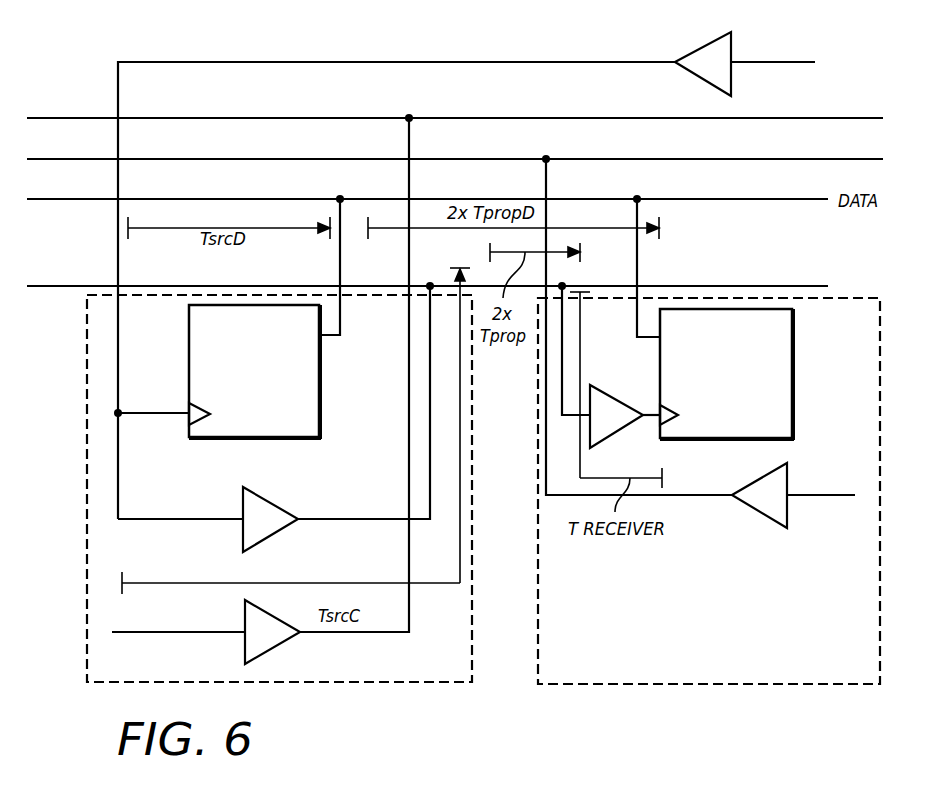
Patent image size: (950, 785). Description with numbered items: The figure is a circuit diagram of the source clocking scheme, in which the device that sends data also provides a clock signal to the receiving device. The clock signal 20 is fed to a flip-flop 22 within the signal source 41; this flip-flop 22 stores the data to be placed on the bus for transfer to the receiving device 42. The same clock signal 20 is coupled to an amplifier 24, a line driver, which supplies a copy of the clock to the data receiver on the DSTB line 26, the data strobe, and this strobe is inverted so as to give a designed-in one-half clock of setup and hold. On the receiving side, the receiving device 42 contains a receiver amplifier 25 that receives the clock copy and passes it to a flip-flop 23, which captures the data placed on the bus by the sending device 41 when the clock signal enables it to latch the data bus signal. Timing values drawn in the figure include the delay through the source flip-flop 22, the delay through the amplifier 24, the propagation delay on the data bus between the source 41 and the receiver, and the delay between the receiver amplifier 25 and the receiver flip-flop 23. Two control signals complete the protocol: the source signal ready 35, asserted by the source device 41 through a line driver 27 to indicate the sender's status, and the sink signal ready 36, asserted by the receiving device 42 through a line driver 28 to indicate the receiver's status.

The clock signal 20 is at (656, 62).
The flip-flop 22 is at (319, 380).
The flip-flop 23 is at (792, 383).
The amplifier 24 is at (272, 533).
The receiver amplifier 25 is at (600, 443).
The DSTB line 26 is at (726, 286).
The line driver 27 is at (273, 645).
The line driver 28 is at (754, 510).
The source signal ready 35 is at (638, 118).
The sink signal ready 36 is at (688, 159).
The signal source 41 is at (437, 683).
The receiving device 42 is at (685, 684).